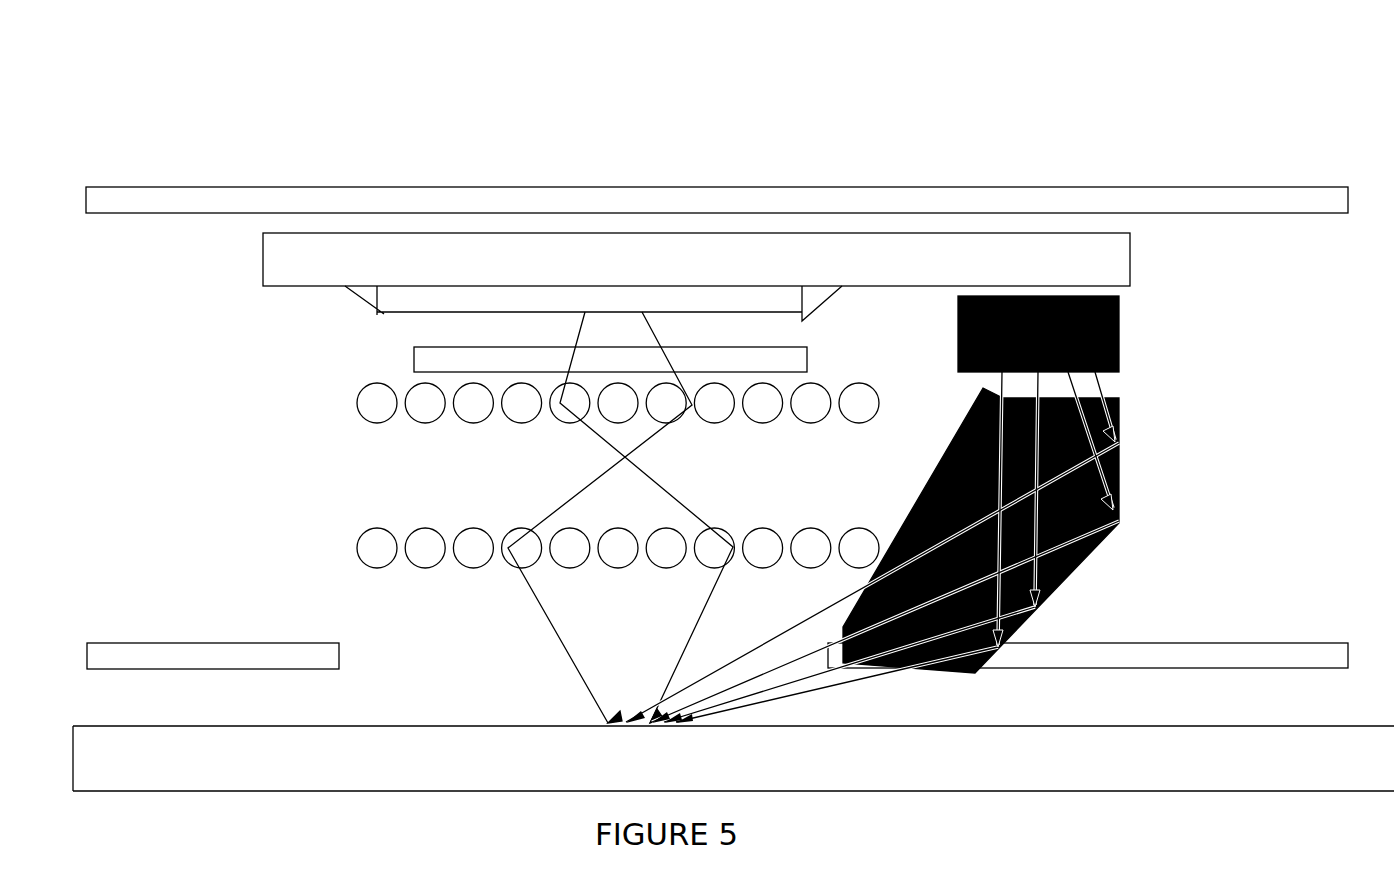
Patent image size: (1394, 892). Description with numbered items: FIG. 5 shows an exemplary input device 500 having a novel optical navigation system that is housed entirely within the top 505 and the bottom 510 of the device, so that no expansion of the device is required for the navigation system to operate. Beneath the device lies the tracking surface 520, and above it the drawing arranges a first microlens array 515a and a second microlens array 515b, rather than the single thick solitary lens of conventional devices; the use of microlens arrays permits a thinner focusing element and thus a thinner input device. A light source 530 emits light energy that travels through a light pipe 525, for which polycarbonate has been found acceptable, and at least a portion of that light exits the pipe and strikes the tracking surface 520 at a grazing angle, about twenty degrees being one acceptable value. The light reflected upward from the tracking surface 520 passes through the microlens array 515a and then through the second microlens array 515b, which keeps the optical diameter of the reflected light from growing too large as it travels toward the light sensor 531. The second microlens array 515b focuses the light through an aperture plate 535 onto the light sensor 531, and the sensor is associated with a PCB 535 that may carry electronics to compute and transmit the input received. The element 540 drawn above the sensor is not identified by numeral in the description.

The input device 500 is at (817, 145).
The top 505 is at (717, 200).
The light guide / diffuser 540 is at (696, 259).
The light sensor 531 is at (593, 303).
The aperture plate 535 is at (610, 359).
The second microlens array 515b is at (357, 403).
The first microlens array 515a is at (357, 548).
The bottom 510 is at (717, 656).
The light pipe 525 is at (1121, 464).
The light source 530 is at (1038, 334).
The tracking surface 520 is at (733, 758).